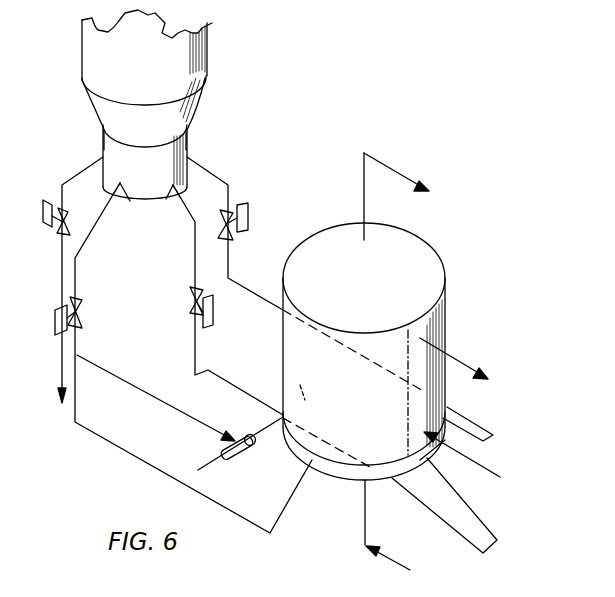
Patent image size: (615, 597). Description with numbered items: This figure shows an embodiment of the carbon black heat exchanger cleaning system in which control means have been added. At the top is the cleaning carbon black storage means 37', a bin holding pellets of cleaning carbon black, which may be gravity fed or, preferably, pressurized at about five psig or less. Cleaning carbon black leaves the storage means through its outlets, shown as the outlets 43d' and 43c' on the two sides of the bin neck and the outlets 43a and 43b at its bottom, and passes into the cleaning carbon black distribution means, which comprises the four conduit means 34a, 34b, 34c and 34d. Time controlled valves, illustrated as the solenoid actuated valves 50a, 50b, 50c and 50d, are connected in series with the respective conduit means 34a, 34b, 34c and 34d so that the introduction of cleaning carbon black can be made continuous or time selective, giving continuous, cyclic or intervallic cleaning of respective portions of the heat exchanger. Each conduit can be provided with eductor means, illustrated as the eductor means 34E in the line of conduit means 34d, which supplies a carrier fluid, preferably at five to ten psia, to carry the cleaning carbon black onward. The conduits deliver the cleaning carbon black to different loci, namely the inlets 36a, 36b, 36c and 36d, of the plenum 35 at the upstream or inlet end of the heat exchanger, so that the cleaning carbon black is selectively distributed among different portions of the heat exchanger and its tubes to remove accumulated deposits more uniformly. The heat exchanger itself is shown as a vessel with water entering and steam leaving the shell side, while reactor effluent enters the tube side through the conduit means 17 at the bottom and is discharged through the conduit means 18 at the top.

The cleaning carbon black storage means 37' is at (175, 104).
The outlet 43d' is at (77, 126).
The outlet 43c' is at (203, 123).
The outlet 43a is at (141, 202).
The outlet 43b is at (173, 208).
The conduit means 34a is at (88, 243).
The conduit means 34b is at (195, 248).
The conduit means 34c is at (229, 185).
The conduit means 34d is at (62, 185).
The eductor means 34E is at (247, 437).
The solenoid actuated valve 50a is at (58, 333).
The solenoid actuated valve 50b is at (192, 312).
The solenoid actuated valve 50c is at (249, 217).
The solenoid actuated valve 50d is at (57, 239).
The plenum 35 is at (340, 483).
The inlet 36a is at (307, 465).
The inlet 36b is at (420, 460).
The inlet 36c is at (425, 408).
The inlet 36d is at (308, 407).
The conduit means 18 is at (390, 163).
The conduit means 17 is at (395, 562).